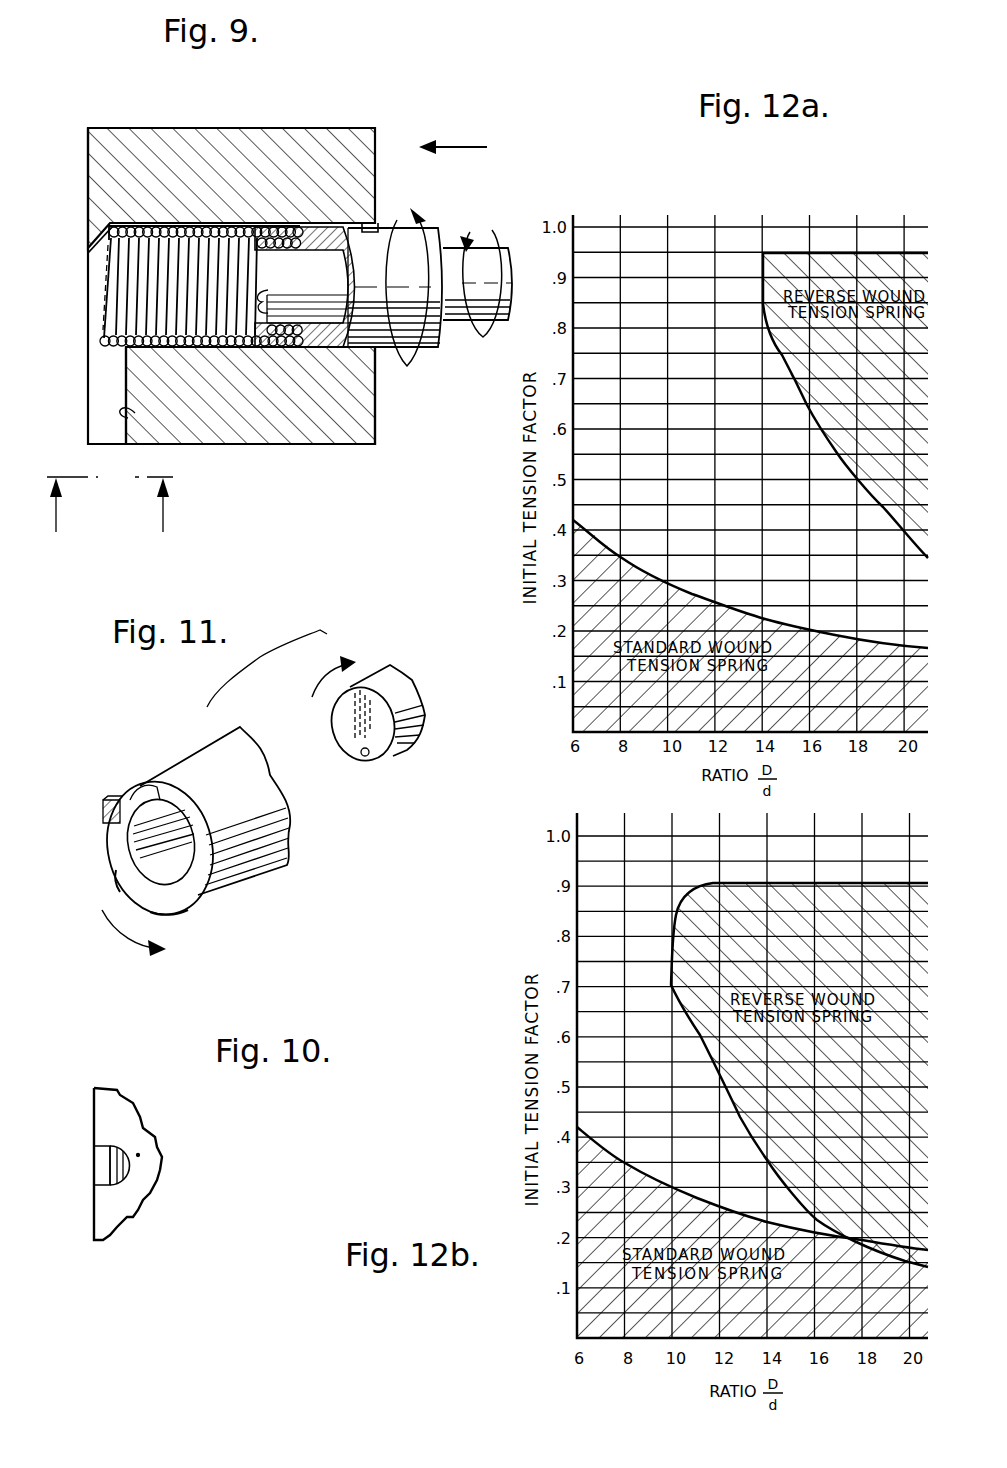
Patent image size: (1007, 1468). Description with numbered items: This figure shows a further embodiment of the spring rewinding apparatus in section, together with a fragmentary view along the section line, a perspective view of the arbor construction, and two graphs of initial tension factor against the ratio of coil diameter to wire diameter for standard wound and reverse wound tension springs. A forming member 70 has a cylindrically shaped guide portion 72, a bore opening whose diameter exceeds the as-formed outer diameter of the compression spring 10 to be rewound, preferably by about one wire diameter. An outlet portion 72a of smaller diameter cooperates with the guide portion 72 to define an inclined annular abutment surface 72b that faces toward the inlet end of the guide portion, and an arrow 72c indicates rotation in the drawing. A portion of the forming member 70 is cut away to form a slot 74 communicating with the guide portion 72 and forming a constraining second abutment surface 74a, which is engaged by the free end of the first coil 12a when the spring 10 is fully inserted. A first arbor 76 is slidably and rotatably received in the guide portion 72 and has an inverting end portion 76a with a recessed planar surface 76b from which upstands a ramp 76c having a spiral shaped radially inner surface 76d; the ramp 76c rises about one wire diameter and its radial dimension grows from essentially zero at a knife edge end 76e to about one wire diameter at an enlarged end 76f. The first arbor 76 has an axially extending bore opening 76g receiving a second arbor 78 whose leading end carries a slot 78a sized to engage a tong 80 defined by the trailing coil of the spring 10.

In FIG. 9, the compression spring 10 is at (175, 343).
In FIG. 9, the first coil 12a is at (104, 298).
In FIG. 10, the first coil 12a is at (94, 1170).
In FIG. 9, the forming member 70 is at (307, 129).
In FIG. 10, the forming member 70 is at (143, 1120).
In FIG. 9, the guide portion 72 is at (318, 338).
In FIG. 9, the outlet portion 72a is at (100, 238).
In FIG. 9, the annular abutment surface 72b is at (109, 232).
In FIG. 9, the rotation of bushing 72c is at (387, 220).
In FIG. 9, the slot 74 is at (98, 391).
In FIG. 10, the slot 74 is at (133, 1177).
In FIG. 9, the second abutment surface 74a is at (128, 418).
In FIG. 10, the second abutment surface 74a is at (94, 1160).
In FIG. 9, the first arbor 76 is at (432, 228).
In FIG. 11, the first arbor 76 is at (267, 863).
In FIG. 9, the inverting end portion 76a is at (313, 238).
In FIG. 11, the inverting end portion 76a is at (180, 917).
In FIG. 9, the recessed planar surface 76b is at (302, 227).
In FIG. 11, the ramp 76c is at (118, 882).
In FIG. 11, the spiral shaped radially inner surface 76d is at (131, 790).
In FIG. 11, the knife edge end 76e is at (157, 787).
In FIG. 11, the enlarged end 76f is at (108, 807).
In FIG. 9, the bore opening 76g is at (357, 303).
In FIG. 11, the bore opening 76g is at (200, 820).
In FIG. 9, the second arbor 78 is at (505, 250).
In FIG. 11, the second arbor 78 is at (378, 663).
In FIG. 9, the slot 78a is at (275, 313).
In FIG. 11, the slot 78a is at (365, 756).
In FIG. 9, the tong 80 is at (260, 297).